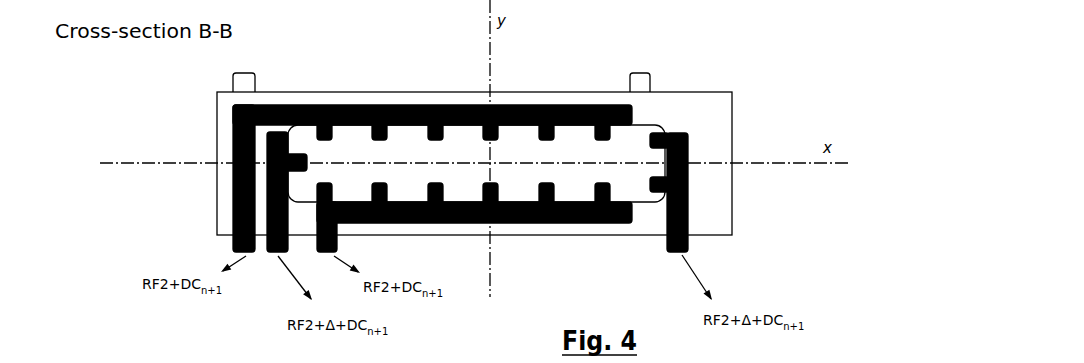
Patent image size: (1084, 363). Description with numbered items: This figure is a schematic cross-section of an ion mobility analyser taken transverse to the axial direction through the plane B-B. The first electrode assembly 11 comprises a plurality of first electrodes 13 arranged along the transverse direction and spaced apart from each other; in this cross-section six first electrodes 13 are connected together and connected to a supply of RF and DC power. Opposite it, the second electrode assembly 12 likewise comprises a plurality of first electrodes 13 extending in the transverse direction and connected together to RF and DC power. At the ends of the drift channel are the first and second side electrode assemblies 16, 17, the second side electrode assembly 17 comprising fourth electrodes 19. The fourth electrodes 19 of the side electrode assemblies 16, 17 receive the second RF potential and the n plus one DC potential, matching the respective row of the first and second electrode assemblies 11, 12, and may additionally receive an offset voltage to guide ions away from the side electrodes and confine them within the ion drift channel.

The first electrode assembly 11 is at (443, 92).
The second electrode assembly 12 is at (600, 230).
The first electrodes 13 is at (322, 105).
The first side electrode assembly 16 is at (271, 258).
The second side electrode assembly 17 is at (695, 135).
The fourth electrodes 19 is at (296, 164).